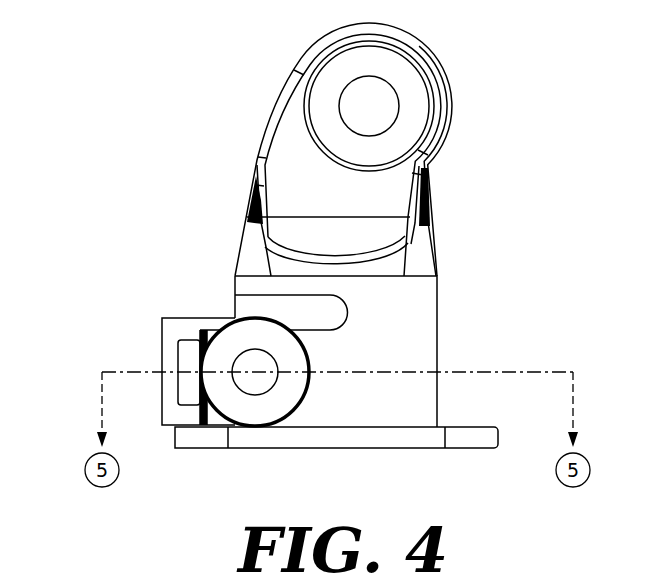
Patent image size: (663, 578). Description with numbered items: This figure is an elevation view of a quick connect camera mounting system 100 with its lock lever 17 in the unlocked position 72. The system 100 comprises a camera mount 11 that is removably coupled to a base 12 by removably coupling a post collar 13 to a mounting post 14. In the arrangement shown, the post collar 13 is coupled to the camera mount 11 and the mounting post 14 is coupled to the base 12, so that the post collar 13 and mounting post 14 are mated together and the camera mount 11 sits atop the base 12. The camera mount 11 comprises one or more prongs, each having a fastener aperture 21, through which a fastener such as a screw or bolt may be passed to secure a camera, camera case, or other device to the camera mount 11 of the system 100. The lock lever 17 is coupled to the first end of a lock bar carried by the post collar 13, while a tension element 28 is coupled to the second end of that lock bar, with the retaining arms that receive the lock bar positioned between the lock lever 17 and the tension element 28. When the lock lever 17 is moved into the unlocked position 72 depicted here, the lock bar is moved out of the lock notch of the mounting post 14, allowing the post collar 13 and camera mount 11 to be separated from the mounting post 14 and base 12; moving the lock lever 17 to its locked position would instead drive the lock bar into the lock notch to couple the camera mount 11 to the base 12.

The quick connect camera mounting system 100 is at (82, 85).
The camera mount 11 is at (378, 191).
The base 12 is at (427, 433).
The post collar 13 is at (412, 323).
The mounting post 14 is at (290, 316).
The lock lever 17 is at (180, 330).
The fastener aperture 21 is at (363, 102).
The tension element 28 is at (253, 412).
The unlocked position 72 is at (118, 322).